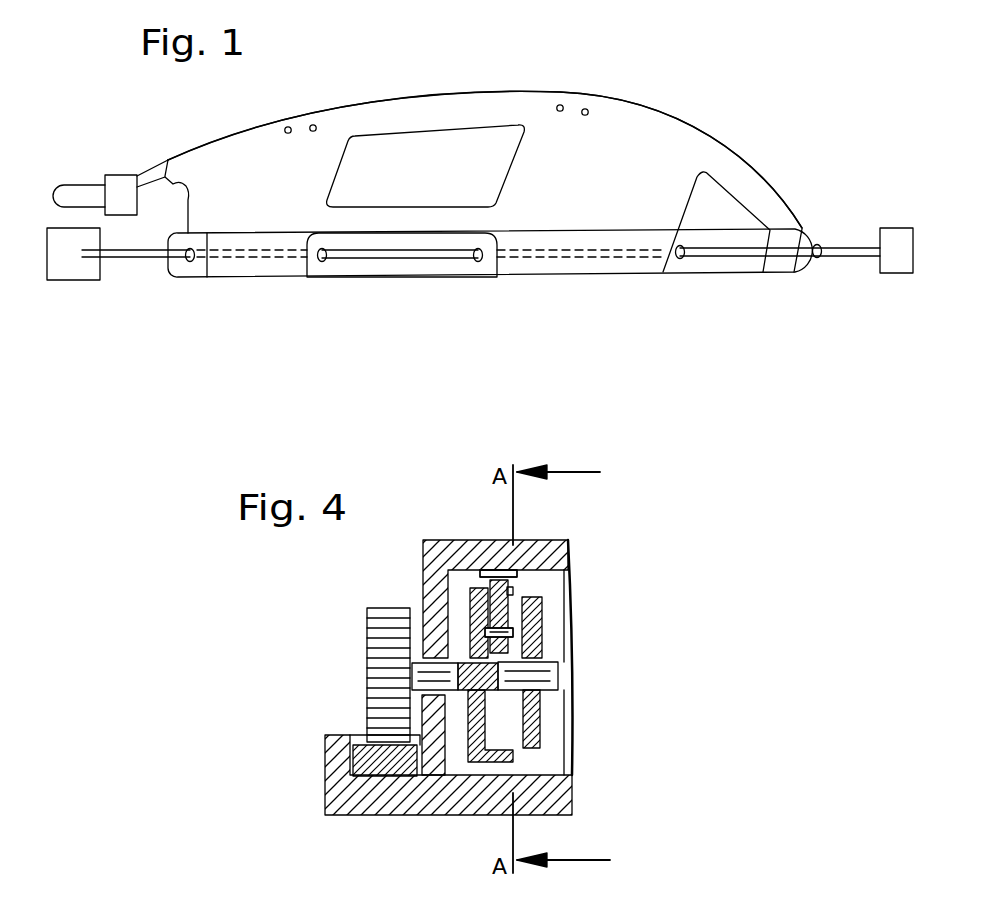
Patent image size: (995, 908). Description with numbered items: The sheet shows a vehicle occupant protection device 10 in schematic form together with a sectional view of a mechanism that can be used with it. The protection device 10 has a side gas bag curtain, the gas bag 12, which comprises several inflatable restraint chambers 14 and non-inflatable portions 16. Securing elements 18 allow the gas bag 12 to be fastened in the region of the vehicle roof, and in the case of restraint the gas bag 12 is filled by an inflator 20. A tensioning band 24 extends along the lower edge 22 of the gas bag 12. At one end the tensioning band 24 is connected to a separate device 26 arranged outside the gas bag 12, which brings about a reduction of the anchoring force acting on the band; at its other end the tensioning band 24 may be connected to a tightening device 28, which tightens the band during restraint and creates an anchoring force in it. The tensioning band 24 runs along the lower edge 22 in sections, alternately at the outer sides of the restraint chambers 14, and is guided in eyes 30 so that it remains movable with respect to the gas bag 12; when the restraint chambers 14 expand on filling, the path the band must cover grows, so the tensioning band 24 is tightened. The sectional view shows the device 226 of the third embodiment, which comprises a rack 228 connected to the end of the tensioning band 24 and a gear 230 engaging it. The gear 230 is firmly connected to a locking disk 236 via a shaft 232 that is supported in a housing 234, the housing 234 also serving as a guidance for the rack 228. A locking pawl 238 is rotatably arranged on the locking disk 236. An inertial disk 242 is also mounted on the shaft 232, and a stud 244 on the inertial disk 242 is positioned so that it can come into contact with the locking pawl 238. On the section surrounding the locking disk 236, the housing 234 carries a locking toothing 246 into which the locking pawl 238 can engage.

In FIG. 1, the vehicle occupant protection device 10 is at (600, 286).
In FIG. 1, the gas bag 12 is at (740, 142).
In FIG. 1, the inflatable restraint chambers 14 is at (227, 152).
In FIG. 1, the non-inflatable portions 16 is at (415, 140).
In FIG. 1, the securing elements 18 is at (313, 124).
In FIG. 1, the inflator 20 is at (118, 183).
In FIG. 1, the lower edge 22 is at (283, 280).
In FIG. 1, the tensioning band 24 is at (150, 257).
In FIG. 1, the separate device 26 is at (75, 270).
In FIG. 1, the tightening device 28 is at (897, 262).
In FIG. 1, the eyes 30 is at (190, 262).
In FIG. 4, the device 226 is at (590, 622).
In FIG. 4, the rack 228 is at (360, 758).
In FIG. 4, the gear 230 is at (367, 630).
In FIG. 4, the shaft 232 is at (552, 672).
In FIG. 4, the housing 234 is at (377, 793).
In FIG. 4, the locking disk 236 is at (467, 753).
In FIG. 4, the locking pawl 238 is at (485, 600).
In FIG. 4, the inertial disk 242 is at (538, 732).
In FIG. 4, the stud 244 is at (520, 595).
In FIG. 4, the locking toothing 246 is at (472, 568).